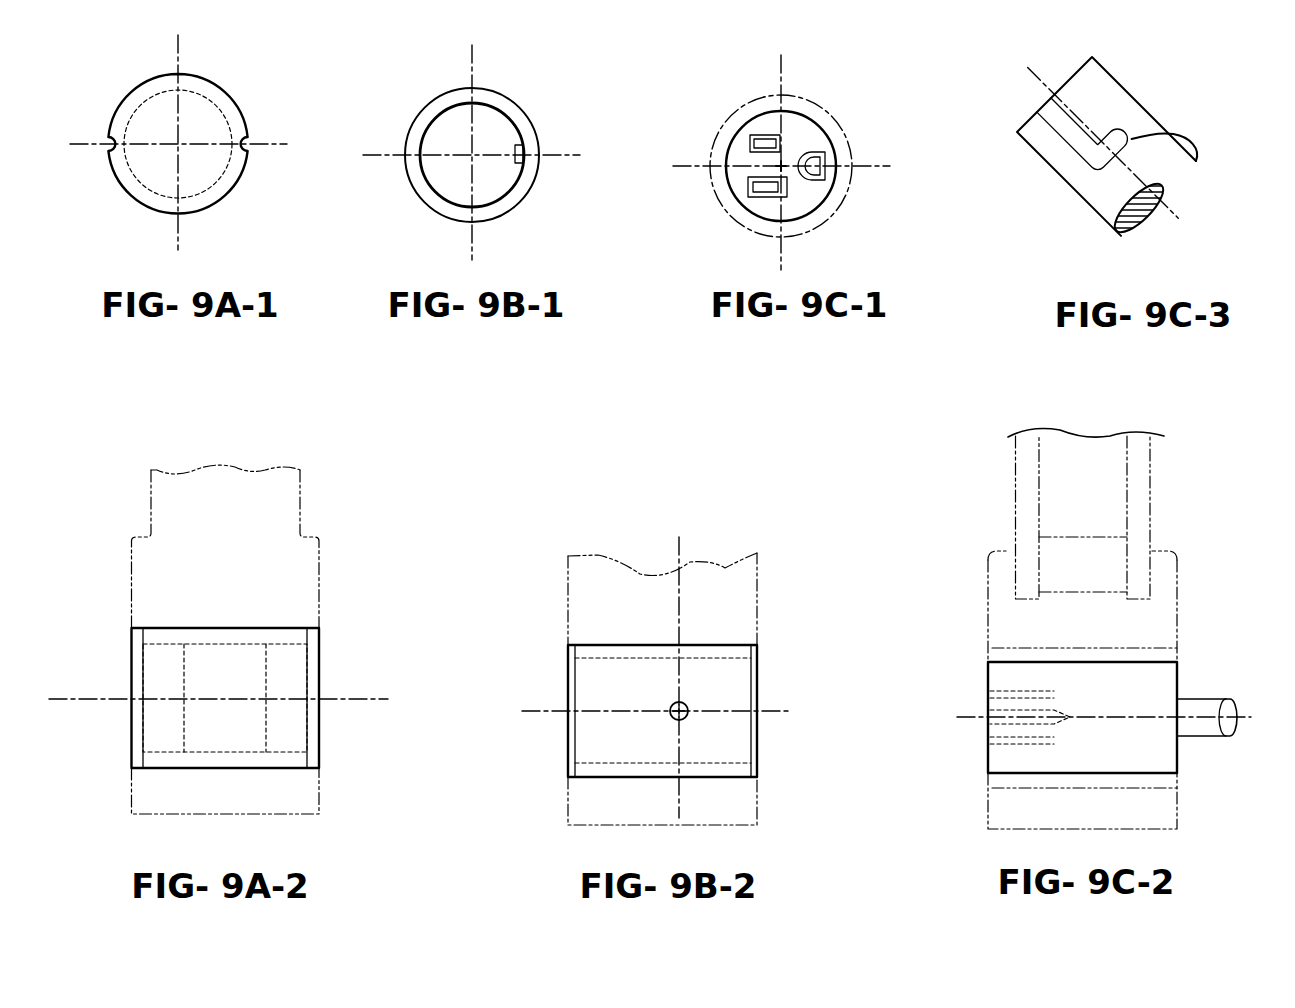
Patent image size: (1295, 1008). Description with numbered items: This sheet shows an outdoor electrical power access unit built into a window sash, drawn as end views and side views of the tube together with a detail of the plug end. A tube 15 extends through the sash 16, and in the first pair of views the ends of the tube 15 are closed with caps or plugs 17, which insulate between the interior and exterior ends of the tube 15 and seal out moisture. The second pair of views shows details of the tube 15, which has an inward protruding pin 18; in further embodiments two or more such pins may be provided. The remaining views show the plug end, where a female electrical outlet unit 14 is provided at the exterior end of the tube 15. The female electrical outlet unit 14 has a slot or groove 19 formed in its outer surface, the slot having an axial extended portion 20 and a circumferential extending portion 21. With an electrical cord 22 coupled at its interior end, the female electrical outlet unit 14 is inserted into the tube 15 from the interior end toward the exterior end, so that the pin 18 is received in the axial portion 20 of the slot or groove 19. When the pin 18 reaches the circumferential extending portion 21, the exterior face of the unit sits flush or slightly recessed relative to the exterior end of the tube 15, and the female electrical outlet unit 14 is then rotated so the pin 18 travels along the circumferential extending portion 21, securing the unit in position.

In FIG. 9C-1, the female electrical outlet unit 14 is at (768, 125).
In FIG. 9C-3, the female electrical outlet unit 14 is at (1160, 93).
In FIG. 9C-2, the female electrical outlet unit 14 is at (972, 689).
In FIG. 9B-1, the tube 15 is at (412, 122).
In FIG. 9A-2, the tube 15 is at (287, 628).
In FIG. 9B-2, the tube 15 is at (636, 645).
In FIG. 9C-2, the tube 15 is at (1130, 662).
In FIG. 9A-2, the sash 16 is at (124, 591).
In FIG. 9C-2, the sash 16 is at (1005, 519).
In FIG. 9A-1, the caps or plugs 17 is at (163, 176).
In FIG. 9A-2, the caps or plugs 17 is at (162, 726).
In FIG. 9B-1, the protruding pin 18 is at (518, 164).
In FIG. 9B-2, the protruding pin 18 is at (688, 705).
In FIG. 9C-3, the slot or groove 19 is at (1106, 146).
In FIG. 9C-3, the axial extended portion 20 is at (1084, 125).
In FIG. 9C-3, the circumferential extending portion 21 is at (1142, 175).
In FIG. 9C-2, the electrical cord 22 is at (1202, 706).